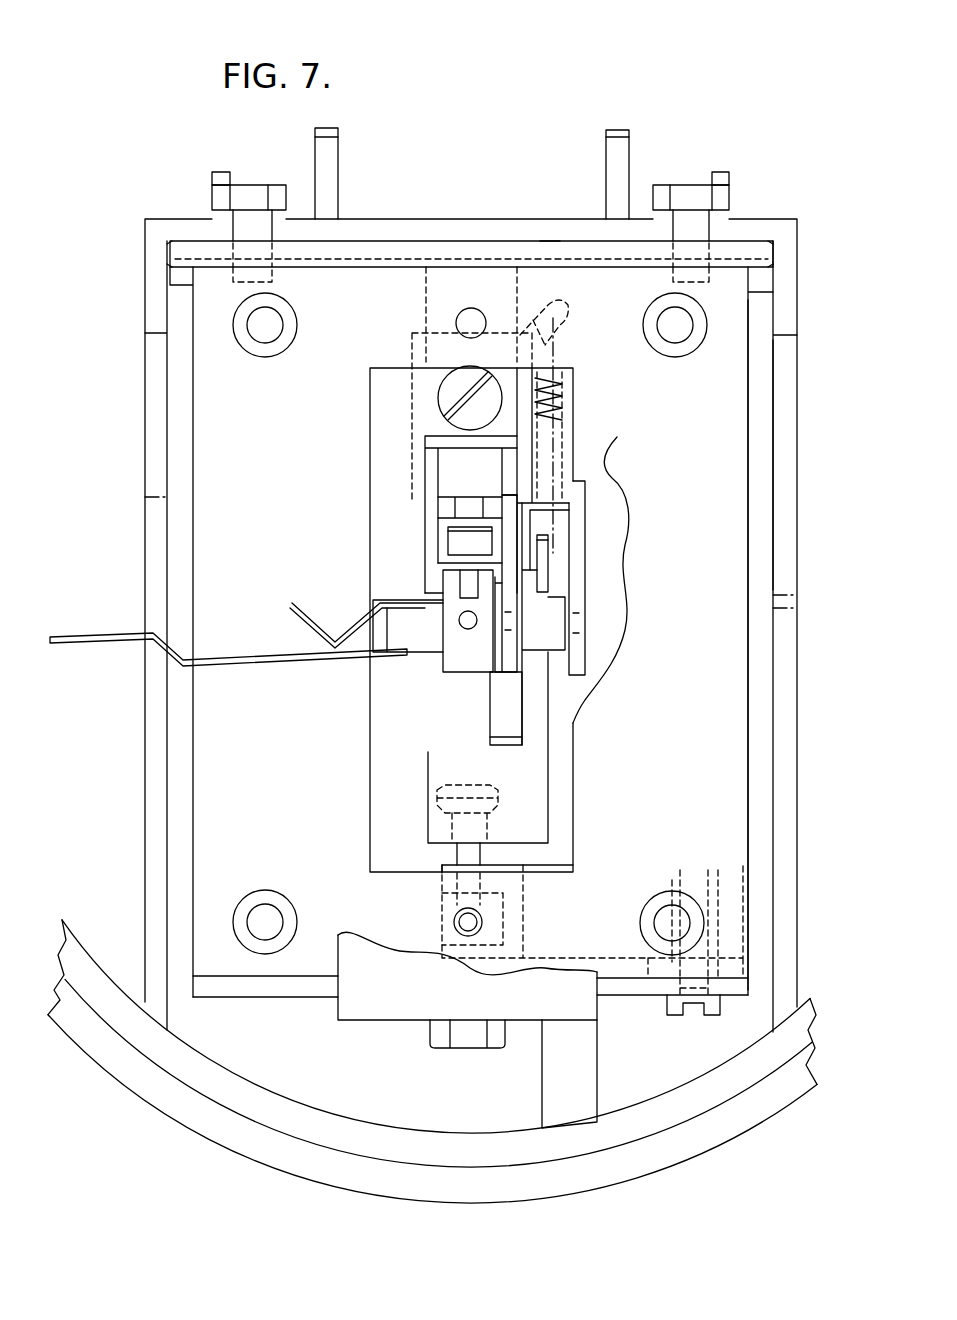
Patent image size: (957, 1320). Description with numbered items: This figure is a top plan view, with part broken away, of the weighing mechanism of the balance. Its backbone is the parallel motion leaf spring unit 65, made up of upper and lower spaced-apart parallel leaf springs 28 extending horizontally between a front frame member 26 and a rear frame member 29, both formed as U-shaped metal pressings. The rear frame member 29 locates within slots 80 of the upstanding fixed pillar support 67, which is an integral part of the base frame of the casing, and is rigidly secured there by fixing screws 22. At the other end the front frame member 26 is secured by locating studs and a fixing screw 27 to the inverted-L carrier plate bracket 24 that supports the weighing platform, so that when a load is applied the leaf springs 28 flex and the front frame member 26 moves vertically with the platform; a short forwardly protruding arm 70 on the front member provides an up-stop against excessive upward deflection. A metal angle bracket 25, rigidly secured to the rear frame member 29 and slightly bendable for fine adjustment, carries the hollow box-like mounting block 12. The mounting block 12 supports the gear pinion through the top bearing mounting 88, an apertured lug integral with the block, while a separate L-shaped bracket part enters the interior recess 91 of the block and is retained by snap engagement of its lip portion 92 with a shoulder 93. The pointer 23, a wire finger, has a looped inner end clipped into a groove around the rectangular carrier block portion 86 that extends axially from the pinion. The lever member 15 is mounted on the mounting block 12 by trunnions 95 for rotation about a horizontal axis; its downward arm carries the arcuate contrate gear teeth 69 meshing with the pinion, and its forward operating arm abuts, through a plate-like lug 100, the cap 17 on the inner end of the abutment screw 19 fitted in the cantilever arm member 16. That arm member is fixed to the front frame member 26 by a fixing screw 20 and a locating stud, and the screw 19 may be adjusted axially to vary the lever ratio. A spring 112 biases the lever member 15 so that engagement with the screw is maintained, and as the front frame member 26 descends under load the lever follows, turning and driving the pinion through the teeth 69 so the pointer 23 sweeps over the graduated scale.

The mounting block 12 is at (510, 478).
The lever member 15 is at (548, 719).
The cantilever arm member 16 is at (633, 888).
The plastic cap 17 is at (445, 800).
The abutment screw 19 is at (470, 858).
The fixing screw 20 is at (683, 1008).
The fixing screws 22 is at (250, 197).
The pointer 23 is at (100, 636).
The carrier plate bracket 24 is at (362, 1005).
The angle bracket 25 is at (440, 422).
The front frame member 26 is at (642, 993).
The fixing screw 27 is at (450, 1038).
The leaf springs 28 is at (696, 470).
The rear frame member 29 is at (386, 253).
The parallel motion leaf spring unit 65 is at (752, 770).
The pillar support 67 is at (531, 238).
The contrate gear teeth 69 is at (490, 720).
The forwardly protruding arm 70 is at (553, 1088).
The slots 80 is at (170, 253).
The carrier block portion 86 is at (415, 638).
The top bearing mounting 88 is at (470, 628).
The interior recess 91 is at (463, 511).
The lip portion 92 is at (462, 541).
The shoulder 93 is at (456, 568).
The trunnions 95 is at (577, 622).
The lug 100 is at (430, 770).
The spring 112 is at (556, 348).